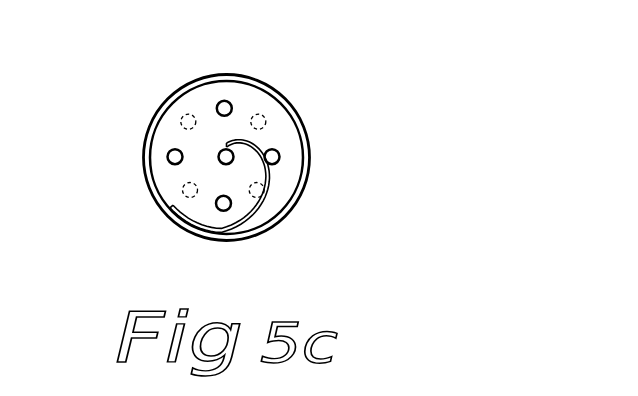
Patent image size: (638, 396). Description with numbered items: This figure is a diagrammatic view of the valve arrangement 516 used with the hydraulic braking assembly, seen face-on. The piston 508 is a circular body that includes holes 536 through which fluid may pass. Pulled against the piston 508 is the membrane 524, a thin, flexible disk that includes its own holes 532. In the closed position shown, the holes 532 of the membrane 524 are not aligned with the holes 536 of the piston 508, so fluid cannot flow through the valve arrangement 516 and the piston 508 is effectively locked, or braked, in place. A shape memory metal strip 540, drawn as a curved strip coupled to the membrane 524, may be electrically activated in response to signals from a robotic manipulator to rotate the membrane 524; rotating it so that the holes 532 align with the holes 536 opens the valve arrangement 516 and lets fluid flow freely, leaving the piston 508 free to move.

The piston 508 is at (259, 80).
The valve arrangement 516 is at (338, 103).
The membrane 524 is at (283, 185).
The holes 532 is at (168, 157).
The holes 536 is at (188, 117).
The shape memory metal strip 540 is at (265, 212).